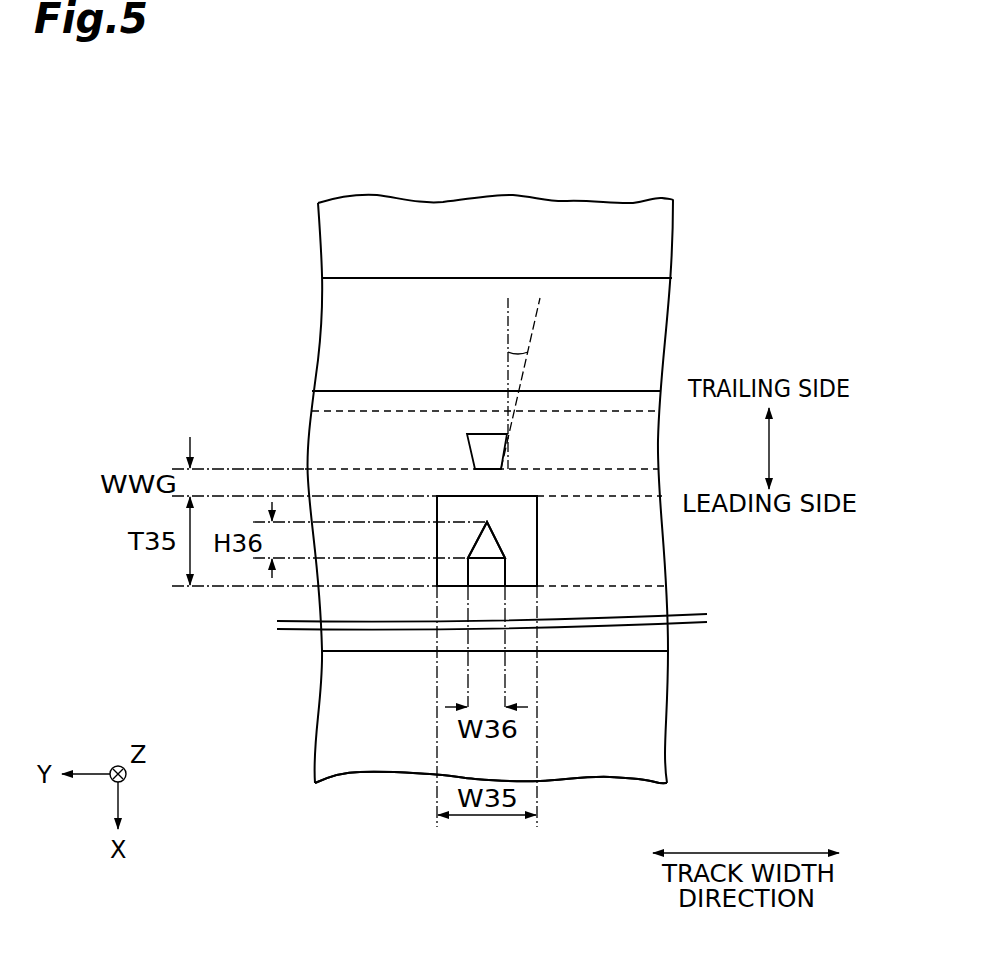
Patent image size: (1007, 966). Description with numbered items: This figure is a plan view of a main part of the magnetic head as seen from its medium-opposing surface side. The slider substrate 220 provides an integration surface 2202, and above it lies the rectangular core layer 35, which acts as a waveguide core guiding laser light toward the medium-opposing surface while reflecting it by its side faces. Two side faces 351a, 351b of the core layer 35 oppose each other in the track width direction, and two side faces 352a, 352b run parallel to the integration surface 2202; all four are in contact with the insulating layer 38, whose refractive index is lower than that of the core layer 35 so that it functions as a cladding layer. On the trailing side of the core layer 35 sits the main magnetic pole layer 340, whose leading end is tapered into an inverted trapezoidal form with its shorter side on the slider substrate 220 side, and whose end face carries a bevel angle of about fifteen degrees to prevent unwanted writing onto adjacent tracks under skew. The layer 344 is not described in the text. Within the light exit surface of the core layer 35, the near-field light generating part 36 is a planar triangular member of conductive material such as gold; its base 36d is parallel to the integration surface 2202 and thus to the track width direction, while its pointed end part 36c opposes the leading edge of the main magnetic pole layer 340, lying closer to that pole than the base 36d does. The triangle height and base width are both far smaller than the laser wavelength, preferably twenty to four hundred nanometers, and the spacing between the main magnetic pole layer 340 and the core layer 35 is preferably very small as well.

The insulating layer 38 is at (662, 249).
The trailing shield layer 344 is at (352, 338).
The main magnetic pole layer 340 is at (483, 452).
The core layer 35 is at (512, 497).
The side face 352a is at (463, 495).
The side face 351a is at (435, 512).
The side face 351b is at (540, 503).
The side face 352b is at (455, 587).
The near-field light generating part 36 is at (490, 545).
The pointed end part 36c is at (487, 522).
The base 36d is at (485, 562).
The integration surface 2202 is at (341, 651).
The slider substrate 220 is at (643, 708).